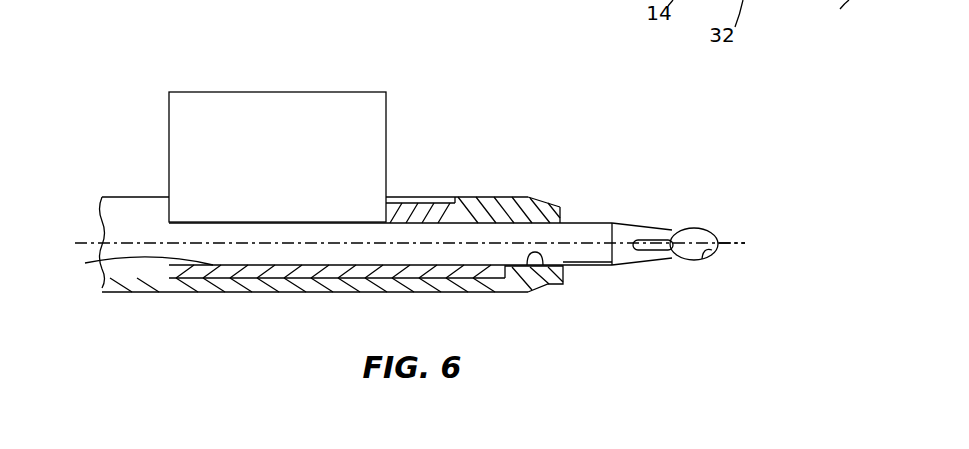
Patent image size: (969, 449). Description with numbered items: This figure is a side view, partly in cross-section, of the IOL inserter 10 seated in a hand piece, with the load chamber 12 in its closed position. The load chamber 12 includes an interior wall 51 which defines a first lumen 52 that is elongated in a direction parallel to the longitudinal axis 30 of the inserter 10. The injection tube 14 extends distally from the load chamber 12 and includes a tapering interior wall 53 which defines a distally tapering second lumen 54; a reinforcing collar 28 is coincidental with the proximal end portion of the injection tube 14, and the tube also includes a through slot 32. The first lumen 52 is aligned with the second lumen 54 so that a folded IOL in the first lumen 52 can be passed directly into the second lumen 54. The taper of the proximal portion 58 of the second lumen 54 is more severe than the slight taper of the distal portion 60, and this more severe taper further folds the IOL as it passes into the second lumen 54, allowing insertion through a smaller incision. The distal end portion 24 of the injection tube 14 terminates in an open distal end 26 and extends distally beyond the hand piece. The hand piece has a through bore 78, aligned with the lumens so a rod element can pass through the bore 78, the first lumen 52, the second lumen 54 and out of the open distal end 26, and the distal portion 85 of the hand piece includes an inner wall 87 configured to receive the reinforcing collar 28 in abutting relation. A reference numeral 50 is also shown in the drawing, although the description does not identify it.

The IOL inserter 10 is at (431, 110).
The load chamber 12 is at (158, 187).
The injection tube 14 is at (584, 276).
The distal end portion 24 is at (612, 225).
The open distal end 26 is at (706, 258).
The reinforcing collar 28 is at (493, 215).
The longitudinal axis 30 is at (737, 240).
The through slot 32 is at (268, 88).
The coupler 50 is at (537, 188).
The interior wall 51 is at (134, 265).
The first lumen 52 is at (248, 255).
The tapering interior wall 53 is at (540, 264).
The second lumen 54 is at (462, 253).
The proximal portion 58 is at (423, 253).
The distal portion 60 is at (595, 240).
The through bore 78 is at (150, 229).
The distal portion 85 is at (555, 197).
The inner wall 87 is at (503, 200).